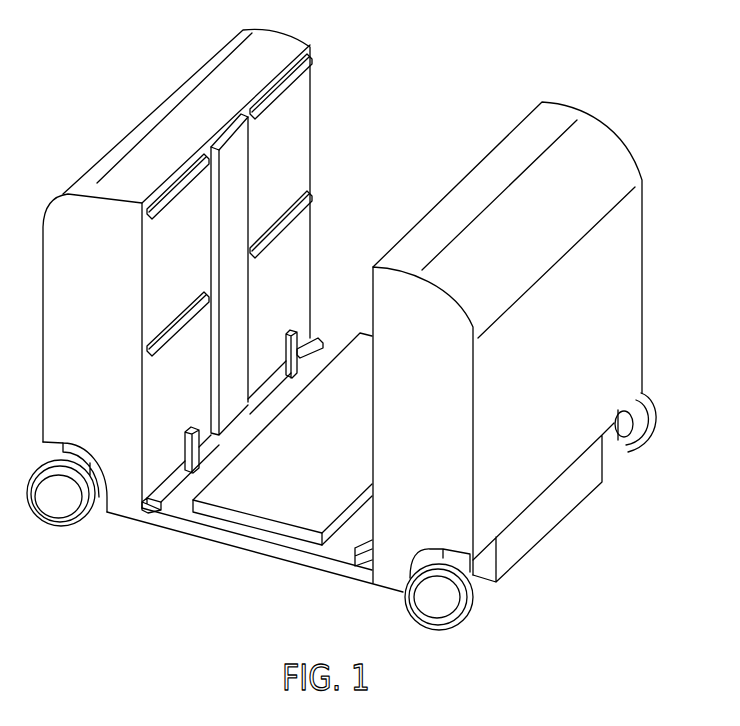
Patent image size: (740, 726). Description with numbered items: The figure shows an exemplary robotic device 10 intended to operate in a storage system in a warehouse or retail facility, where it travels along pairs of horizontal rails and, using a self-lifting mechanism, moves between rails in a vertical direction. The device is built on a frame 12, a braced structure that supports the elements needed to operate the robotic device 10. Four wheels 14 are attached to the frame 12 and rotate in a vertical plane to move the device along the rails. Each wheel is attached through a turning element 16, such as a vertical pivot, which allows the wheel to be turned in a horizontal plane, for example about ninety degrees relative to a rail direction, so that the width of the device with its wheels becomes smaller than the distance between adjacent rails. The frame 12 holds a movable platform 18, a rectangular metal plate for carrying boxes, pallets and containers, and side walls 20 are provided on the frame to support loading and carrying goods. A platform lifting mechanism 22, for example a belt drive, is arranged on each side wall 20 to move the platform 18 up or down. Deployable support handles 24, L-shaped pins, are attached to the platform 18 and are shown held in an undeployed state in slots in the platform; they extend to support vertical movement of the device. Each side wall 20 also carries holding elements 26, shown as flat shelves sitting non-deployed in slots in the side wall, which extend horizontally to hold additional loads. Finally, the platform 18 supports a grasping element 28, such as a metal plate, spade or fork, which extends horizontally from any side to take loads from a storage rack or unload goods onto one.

The robotic device 10 is at (612, 68).
The frame 12 is at (167, 530).
The wheels 14 is at (475, 603).
The turning elements 16 is at (605, 440).
The movable platform 18 is at (342, 543).
The side walls 20 is at (643, 275).
The platform lifting mechanism 22 is at (237, 147).
The deployable support handles 24 is at (291, 330).
The holding elements 26 is at (183, 317).
The grasping element 28 is at (257, 500).